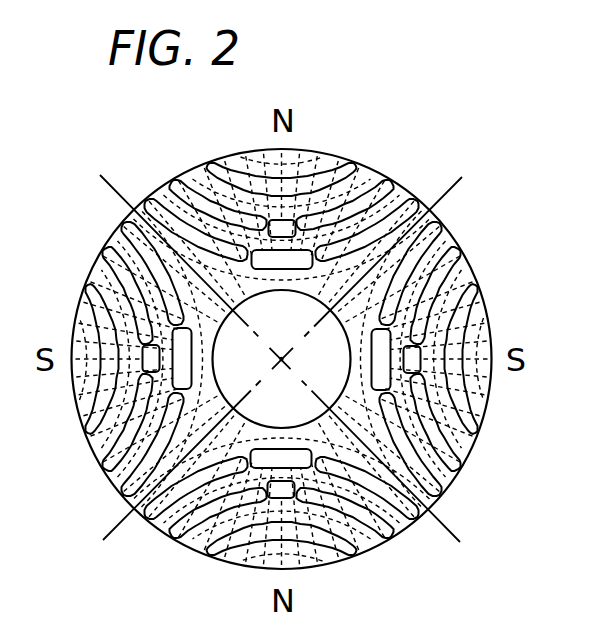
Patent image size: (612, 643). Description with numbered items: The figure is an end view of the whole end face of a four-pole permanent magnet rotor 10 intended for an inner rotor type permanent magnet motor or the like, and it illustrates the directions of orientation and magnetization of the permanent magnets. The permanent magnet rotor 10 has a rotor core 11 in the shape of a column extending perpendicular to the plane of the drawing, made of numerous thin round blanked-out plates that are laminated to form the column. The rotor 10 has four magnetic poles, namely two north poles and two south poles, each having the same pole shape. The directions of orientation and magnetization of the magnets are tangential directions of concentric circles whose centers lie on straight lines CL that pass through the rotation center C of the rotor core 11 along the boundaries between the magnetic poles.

The permanent magnet rotor 10 is at (307, 322).
The rotor core 11 is at (457, 272).
The straight lines CL is at (450, 190).
The rotation center C is at (284, 359).